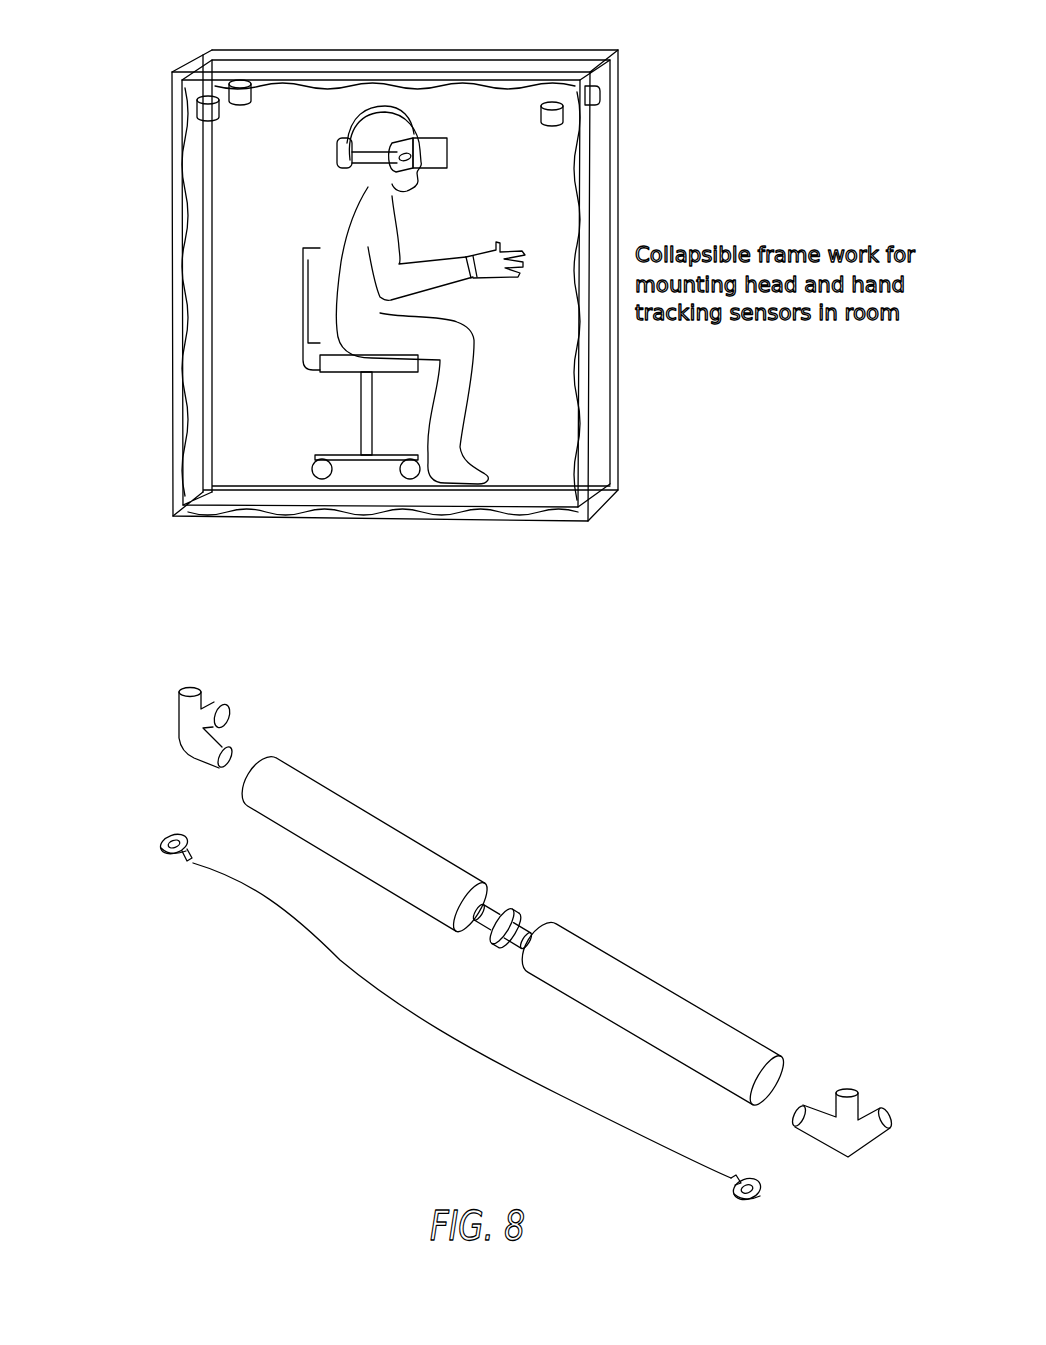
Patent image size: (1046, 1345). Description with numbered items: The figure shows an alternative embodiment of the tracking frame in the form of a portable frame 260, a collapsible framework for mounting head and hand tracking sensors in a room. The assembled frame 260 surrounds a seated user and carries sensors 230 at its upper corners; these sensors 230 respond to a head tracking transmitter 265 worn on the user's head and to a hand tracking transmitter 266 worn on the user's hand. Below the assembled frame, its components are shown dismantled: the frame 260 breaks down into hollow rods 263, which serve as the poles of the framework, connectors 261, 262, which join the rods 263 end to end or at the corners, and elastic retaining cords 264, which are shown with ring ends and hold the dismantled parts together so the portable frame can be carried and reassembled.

The sensors 230 is at (207, 99).
The portable frame 260 is at (112, 206).
The connectors 261 is at (858, 1092).
The connectors 262 is at (517, 905).
The hollow rods 263 is at (663, 998).
The elastic retaining cords 264 is at (540, 1080).
The head tracking transmitter 265 is at (438, 158).
The hand tracking transmitter 266 is at (510, 278).